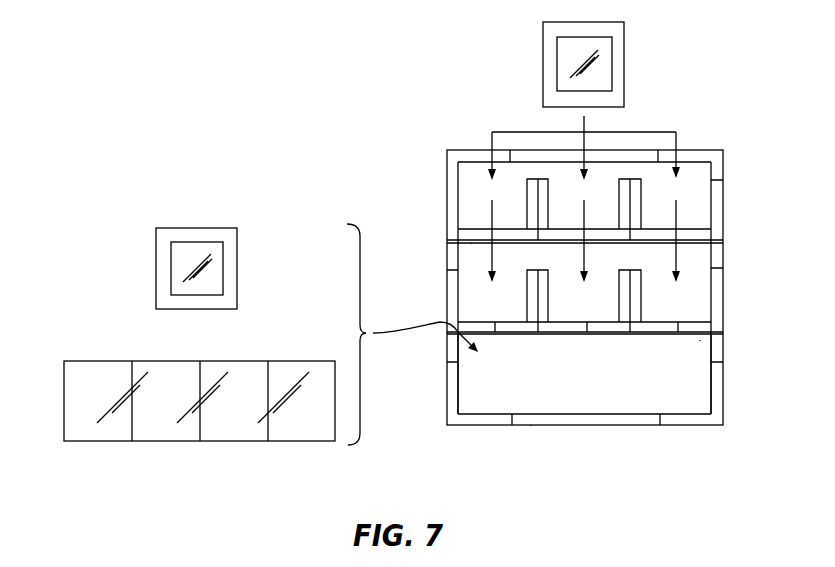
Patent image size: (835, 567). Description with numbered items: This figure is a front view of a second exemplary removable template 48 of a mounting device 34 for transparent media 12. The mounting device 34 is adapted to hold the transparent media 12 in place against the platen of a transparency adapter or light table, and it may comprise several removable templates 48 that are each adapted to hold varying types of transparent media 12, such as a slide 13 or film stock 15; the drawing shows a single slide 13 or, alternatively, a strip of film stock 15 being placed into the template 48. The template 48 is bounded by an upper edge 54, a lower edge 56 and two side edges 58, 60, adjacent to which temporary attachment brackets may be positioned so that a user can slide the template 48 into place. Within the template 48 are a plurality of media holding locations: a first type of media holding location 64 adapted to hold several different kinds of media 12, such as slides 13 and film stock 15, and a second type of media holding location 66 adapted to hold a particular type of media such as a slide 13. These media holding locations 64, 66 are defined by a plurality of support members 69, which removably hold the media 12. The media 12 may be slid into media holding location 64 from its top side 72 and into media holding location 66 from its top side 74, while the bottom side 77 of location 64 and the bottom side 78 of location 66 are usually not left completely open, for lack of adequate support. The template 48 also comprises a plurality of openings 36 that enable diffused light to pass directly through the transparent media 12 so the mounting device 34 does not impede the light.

The transparent media 12 is at (95, 254).
The slide 13 is at (197, 228).
The film stock 15 is at (235, 441).
The mounting device 34 is at (673, 67).
The removable template 48 is at (593, 293).
The openings 36 is at (697, 175).
The upper edge 54 is at (698, 150).
The lower edge 56 is at (584, 425).
The side edge 58 is at (447, 385).
The side edge 60 is at (723, 247).
The media holding location 64 is at (748, 377).
The media holding location 66 is at (746, 196).
The support members 69 is at (533, 193).
The top side 72 is at (704, 343).
The top side 74 is at (471, 151).
The bottom side 77 is at (532, 442).
The bottom side 78 is at (471, 256).